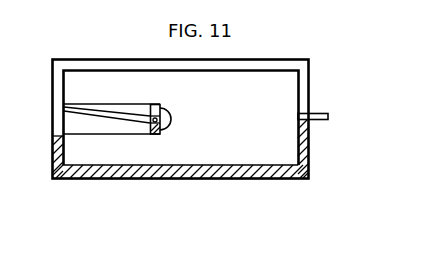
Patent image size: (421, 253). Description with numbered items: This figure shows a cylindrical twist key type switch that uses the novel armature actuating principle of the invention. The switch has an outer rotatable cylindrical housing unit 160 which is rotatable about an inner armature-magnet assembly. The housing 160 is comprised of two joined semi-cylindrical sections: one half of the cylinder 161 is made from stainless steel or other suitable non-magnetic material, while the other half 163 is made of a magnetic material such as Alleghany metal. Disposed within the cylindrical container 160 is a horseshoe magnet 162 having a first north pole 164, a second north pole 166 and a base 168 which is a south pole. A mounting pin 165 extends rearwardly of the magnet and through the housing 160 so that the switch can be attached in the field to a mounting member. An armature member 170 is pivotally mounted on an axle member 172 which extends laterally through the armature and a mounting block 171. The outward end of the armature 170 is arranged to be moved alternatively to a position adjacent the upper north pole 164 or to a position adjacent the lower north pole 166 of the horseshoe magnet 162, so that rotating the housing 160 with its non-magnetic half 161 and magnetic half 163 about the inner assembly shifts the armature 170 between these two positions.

The cylindrical housing unit 160 is at (362, 113).
The non-magnetic half of the cylinder 161 is at (308, 83).
The horseshoe magnet 162 is at (200, 96).
The magnetic half of the cylinder 163 is at (306, 152).
The first north pole 164 is at (100, 81).
The mounting pin 165 is at (324, 120).
The second north pole 166 is at (96, 158).
The base 168 is at (272, 152).
The armature member 170 is at (152, 133).
The mounting block 171 is at (158, 133).
The axle member 172 is at (162, 104).